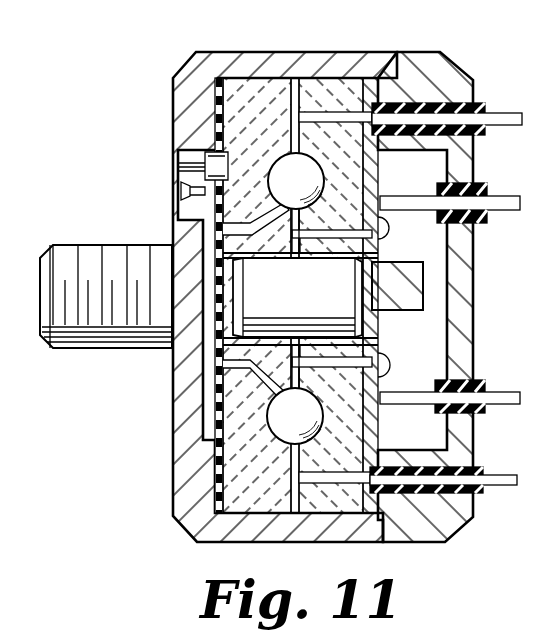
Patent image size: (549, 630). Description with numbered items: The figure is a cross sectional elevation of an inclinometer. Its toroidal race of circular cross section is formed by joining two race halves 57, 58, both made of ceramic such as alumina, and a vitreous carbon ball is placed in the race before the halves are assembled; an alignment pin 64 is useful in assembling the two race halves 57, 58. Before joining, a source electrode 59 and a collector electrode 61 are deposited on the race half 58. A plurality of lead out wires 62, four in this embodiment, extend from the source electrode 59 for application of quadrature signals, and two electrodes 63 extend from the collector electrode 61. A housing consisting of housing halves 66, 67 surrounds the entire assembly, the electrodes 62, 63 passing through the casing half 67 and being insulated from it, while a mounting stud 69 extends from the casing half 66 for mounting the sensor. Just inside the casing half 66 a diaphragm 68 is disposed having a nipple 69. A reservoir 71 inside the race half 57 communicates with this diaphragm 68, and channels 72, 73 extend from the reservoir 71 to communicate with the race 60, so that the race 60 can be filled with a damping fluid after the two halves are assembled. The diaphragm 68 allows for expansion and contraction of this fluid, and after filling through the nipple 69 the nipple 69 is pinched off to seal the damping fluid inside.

The race half 57 is at (263, 97).
The race half 58 is at (331, 100).
The source electrode 59 is at (298, 136).
The race 60 is at (283, 153).
The collector electrode 61 is at (336, 202).
The lead out wires 62 is at (475, 107).
The electrodes 63 is at (346, 229).
The alignment pin 64 is at (288, 300).
The housing half 66 is at (197, 545).
The housing half 67 is at (455, 524).
The diaphragm 68 is at (220, 142).
The mounting stud 69 is at (178, 172).
The reservoir 71 is at (235, 167).
The channel 72 is at (241, 222).
The channel 73 is at (233, 366).